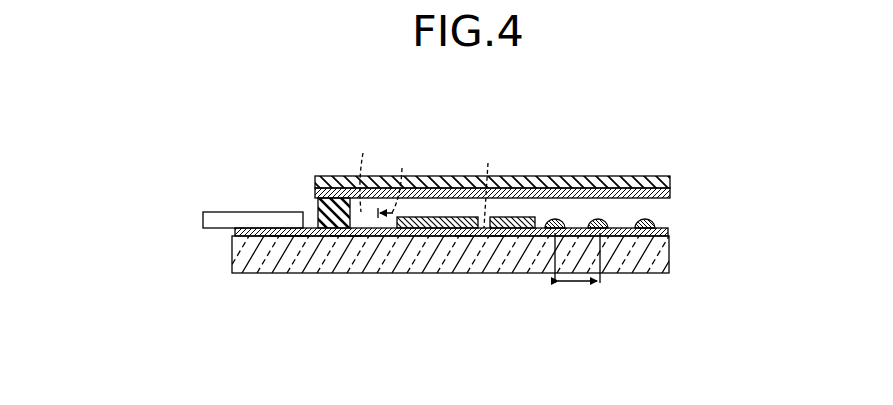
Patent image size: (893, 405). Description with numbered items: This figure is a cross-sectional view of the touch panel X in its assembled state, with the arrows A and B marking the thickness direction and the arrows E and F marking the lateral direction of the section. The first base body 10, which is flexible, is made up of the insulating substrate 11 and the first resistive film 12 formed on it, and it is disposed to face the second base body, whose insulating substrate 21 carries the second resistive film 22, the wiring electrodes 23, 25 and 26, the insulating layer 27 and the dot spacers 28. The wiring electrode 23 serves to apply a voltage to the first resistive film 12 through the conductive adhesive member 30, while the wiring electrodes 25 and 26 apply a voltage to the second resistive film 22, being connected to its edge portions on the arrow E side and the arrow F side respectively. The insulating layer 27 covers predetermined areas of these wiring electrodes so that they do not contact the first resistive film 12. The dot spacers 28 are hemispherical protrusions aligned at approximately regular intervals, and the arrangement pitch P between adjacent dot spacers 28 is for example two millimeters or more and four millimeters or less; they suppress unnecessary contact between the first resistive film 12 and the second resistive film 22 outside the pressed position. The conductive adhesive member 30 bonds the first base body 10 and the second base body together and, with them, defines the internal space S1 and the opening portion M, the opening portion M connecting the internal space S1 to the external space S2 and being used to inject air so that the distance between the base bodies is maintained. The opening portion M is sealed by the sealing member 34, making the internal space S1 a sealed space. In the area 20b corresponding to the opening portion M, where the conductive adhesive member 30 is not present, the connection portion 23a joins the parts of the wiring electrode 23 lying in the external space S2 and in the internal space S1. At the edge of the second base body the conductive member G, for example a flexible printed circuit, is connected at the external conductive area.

The first base body 10 is at (451, 178).
The insulating substrate 11 is at (315, 182).
The first resistive film 12 is at (315, 192).
The area 20b is at (337, 236).
The insulating substrate 21 is at (660, 262).
The second resistive film 22 is at (667, 232).
The wiring electrode 23 is at (290, 238).
The connection portion 23a is at (355, 236).
The wiring electrode 25 is at (498, 236).
The wiring electrode 26 is at (463, 236).
The insulating layer 27 is at (436, 216).
The dot spacer 28 is at (609, 217).
The conductive adhesive member 30 is at (398, 184).
The sealing member 34 is at (337, 201).
The conductive member G is at (221, 211).
The opening portion M is at (364, 173).
The touch panel X is at (613, 152).
The internal space S1 is at (487, 185).
The external space S2 is at (568, 163).
The arrangement pitch P is at (577, 271).
The arrow A is at (743, 258).
The arrow B is at (742, 280).
The arrow E is at (520, 341).
The arrow F is at (532, 341).